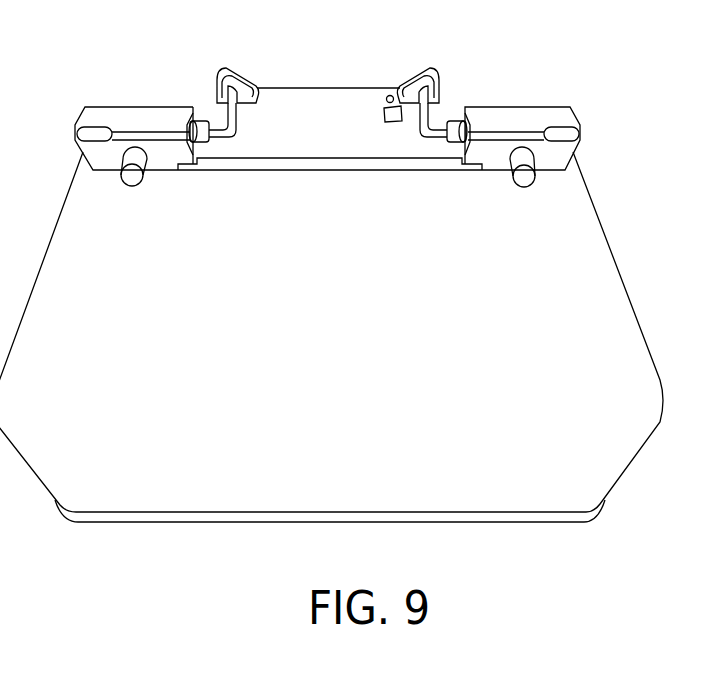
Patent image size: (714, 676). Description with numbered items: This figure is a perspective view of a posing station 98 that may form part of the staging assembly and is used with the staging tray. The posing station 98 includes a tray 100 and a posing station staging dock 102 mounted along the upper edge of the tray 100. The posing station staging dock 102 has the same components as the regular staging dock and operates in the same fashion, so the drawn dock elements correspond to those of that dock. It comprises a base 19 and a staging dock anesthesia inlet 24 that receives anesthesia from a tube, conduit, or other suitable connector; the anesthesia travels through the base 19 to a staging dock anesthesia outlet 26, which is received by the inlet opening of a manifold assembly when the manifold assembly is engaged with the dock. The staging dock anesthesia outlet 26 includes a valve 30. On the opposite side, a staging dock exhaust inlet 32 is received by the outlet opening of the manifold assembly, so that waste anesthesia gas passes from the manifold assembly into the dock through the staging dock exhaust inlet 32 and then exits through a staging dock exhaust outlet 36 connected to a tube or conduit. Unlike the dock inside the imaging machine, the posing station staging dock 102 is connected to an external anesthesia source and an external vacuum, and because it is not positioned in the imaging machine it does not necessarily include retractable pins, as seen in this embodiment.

The base 19 is at (293, 96).
The posing station staging dock 102 is at (371, 96).
The staging dock anesthesia inlet 24 is at (195, 122).
The staging dock exhaust outlet 36 is at (456, 122).
The staging dock anesthesia outlet 26 is at (146, 192).
The valve 30 is at (143, 163).
The staging dock exhaust inlet 32 is at (523, 188).
The posing station 98 is at (374, 139).
The tray 100 is at (308, 343).